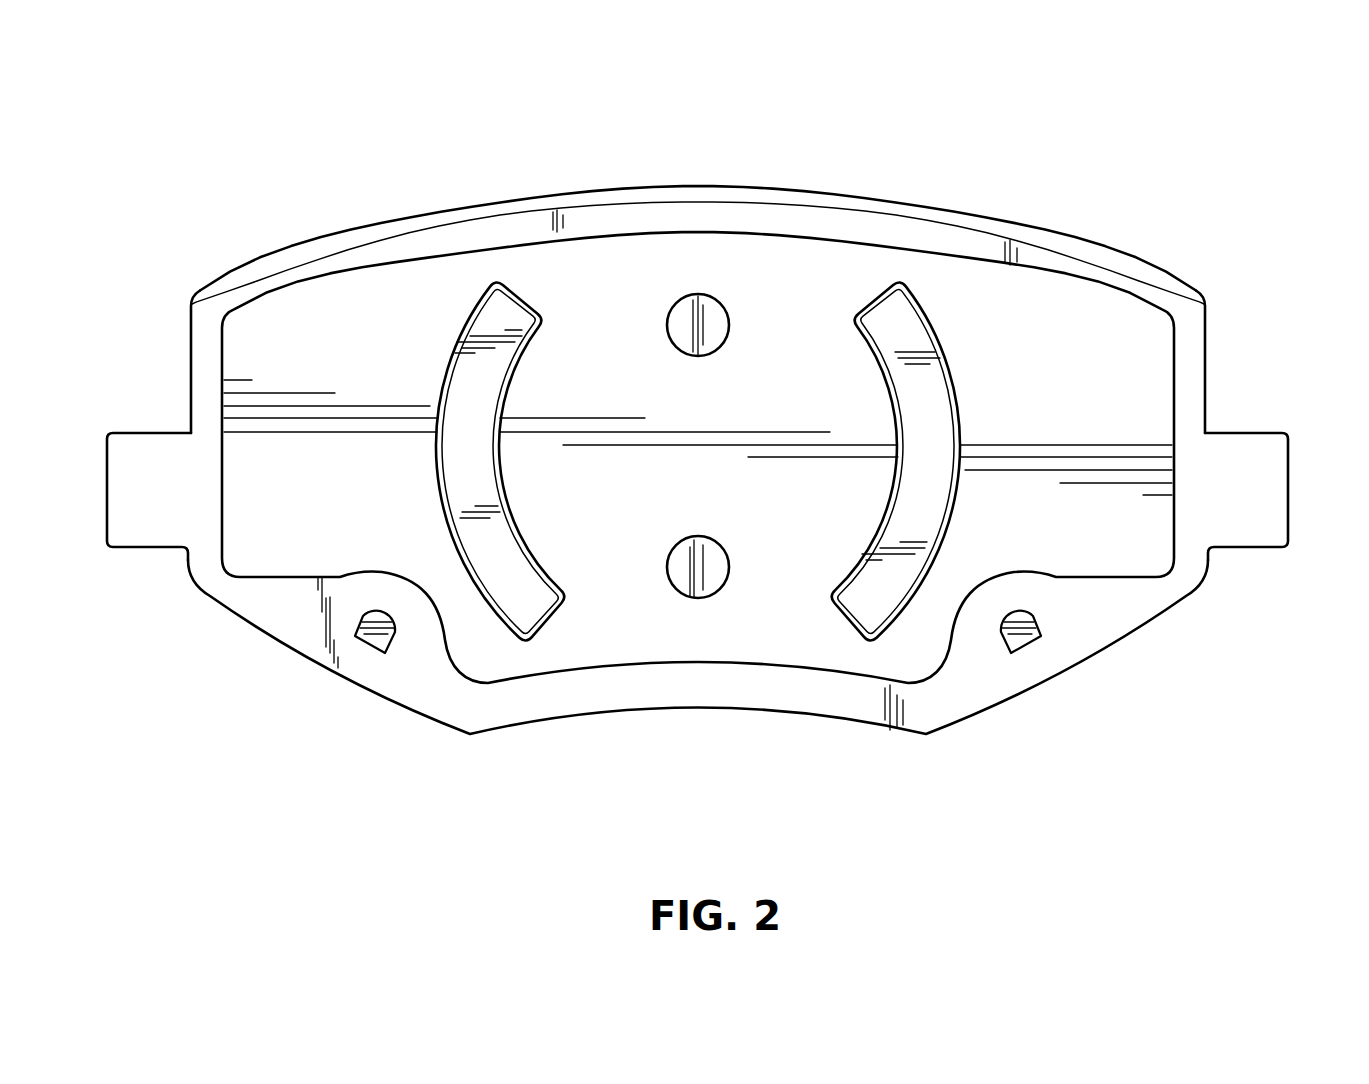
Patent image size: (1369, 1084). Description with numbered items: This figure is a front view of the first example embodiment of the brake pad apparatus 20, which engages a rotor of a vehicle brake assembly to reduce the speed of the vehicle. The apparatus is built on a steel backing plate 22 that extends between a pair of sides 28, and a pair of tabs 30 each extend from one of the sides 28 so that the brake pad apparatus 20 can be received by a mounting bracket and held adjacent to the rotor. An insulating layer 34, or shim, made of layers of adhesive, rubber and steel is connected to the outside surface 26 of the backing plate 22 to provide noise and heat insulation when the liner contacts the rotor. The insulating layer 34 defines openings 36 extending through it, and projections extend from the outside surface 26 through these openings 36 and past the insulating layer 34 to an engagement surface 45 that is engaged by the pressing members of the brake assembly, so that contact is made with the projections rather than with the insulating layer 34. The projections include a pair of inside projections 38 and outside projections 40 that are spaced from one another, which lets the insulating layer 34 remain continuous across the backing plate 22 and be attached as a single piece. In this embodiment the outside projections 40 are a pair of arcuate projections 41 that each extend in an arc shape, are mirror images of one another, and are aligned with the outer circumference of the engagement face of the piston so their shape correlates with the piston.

The brake pad apparatus 20 is at (1148, 209).
The backing plate 22 is at (375, 232).
The outside surface 26 is at (300, 285).
The sides 28 is at (191, 345).
The tabs 30 is at (118, 473).
The insulating layer 34 is at (290, 545).
The opening 36 is at (523, 560).
The inside projections 38 is at (697, 302).
The outside projections 40 is at (480, 453).
The arcuate projections 41 is at (441, 499).
The engagement surface 45 is at (482, 375).